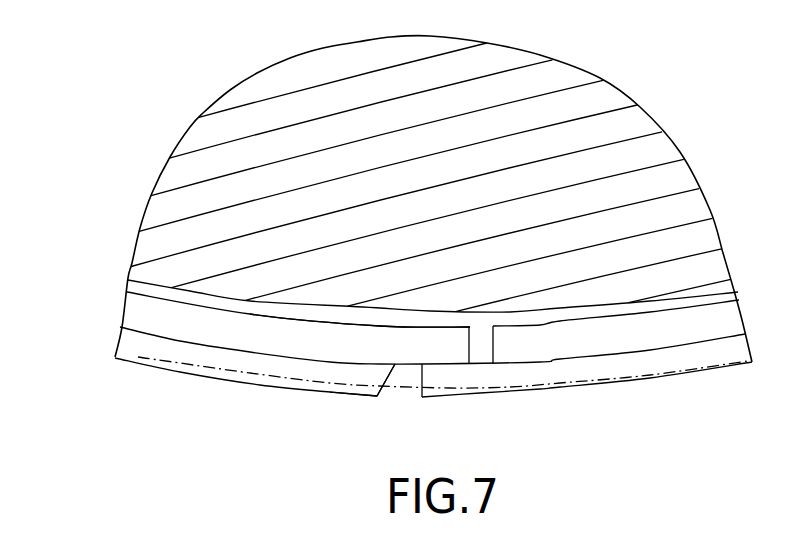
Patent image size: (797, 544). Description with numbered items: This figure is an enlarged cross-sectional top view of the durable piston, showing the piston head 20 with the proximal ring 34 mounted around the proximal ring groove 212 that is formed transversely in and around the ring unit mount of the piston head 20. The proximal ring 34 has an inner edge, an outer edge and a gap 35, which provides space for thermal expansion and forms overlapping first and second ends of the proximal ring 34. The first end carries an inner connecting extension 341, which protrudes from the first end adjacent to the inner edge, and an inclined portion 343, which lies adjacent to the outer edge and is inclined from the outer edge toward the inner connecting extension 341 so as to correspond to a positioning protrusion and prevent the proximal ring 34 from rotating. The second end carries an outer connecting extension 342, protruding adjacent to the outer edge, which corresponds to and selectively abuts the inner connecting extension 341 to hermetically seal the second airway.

The piston head 20 is at (583, 97).
The proximal ring groove 212 is at (140, 289).
The proximal ring 34 is at (197, 358).
The inner connecting extension 341 is at (443, 333).
The gap 35 is at (408, 379).
The inclined portion 343 is at (380, 392).
The outer connecting extension 342 is at (480, 375).